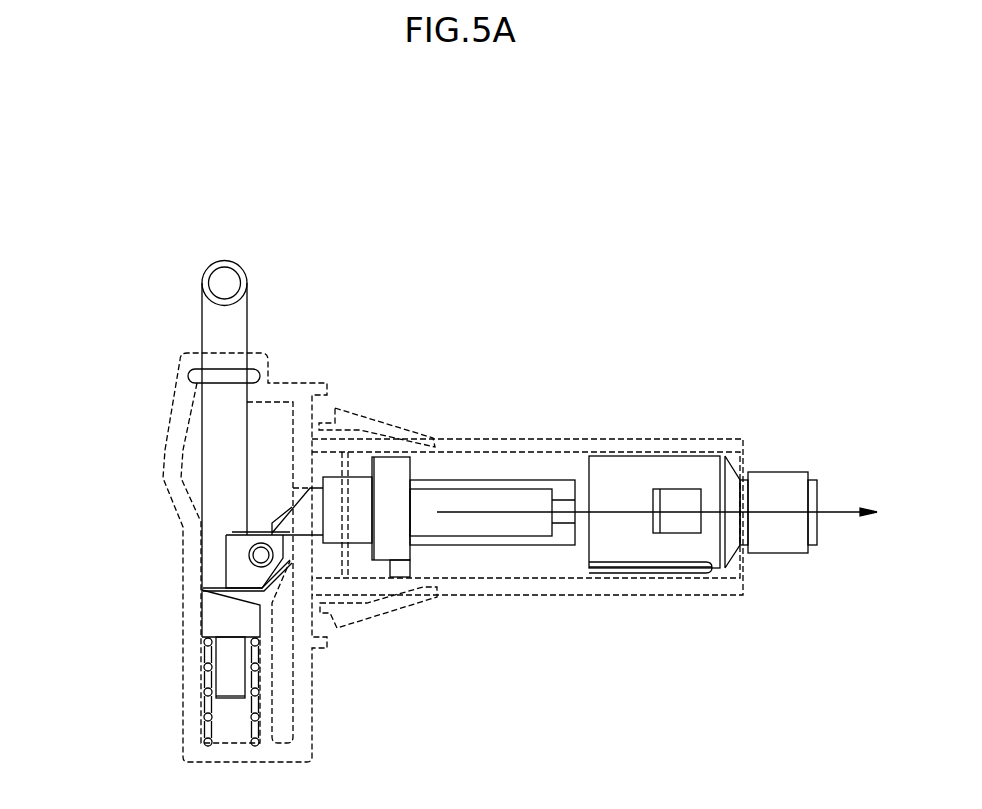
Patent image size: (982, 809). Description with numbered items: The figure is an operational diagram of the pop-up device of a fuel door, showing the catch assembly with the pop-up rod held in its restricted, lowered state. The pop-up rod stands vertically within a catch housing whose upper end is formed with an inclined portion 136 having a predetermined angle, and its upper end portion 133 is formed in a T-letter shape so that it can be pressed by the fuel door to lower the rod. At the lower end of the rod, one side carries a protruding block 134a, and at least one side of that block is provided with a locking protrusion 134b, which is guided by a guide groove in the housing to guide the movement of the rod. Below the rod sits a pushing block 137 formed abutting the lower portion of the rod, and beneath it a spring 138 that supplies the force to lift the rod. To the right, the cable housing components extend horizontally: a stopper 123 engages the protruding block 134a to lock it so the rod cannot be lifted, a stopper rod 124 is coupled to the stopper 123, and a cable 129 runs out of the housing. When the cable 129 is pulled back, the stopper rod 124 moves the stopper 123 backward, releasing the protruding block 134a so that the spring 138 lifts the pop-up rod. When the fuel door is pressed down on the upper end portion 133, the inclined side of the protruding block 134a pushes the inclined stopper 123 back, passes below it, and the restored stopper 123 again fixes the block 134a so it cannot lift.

The stopper 123 is at (283, 525).
The stopper rod 124 is at (389, 472).
The cable 129 is at (492, 512).
The upper end portion 133 is at (228, 281).
The protruding block 134a is at (245, 573).
The locking protrusion 134b is at (258, 553).
The inclined portion 136 is at (168, 418).
The pushing block 137 is at (217, 617).
The spring 138 is at (207, 692).